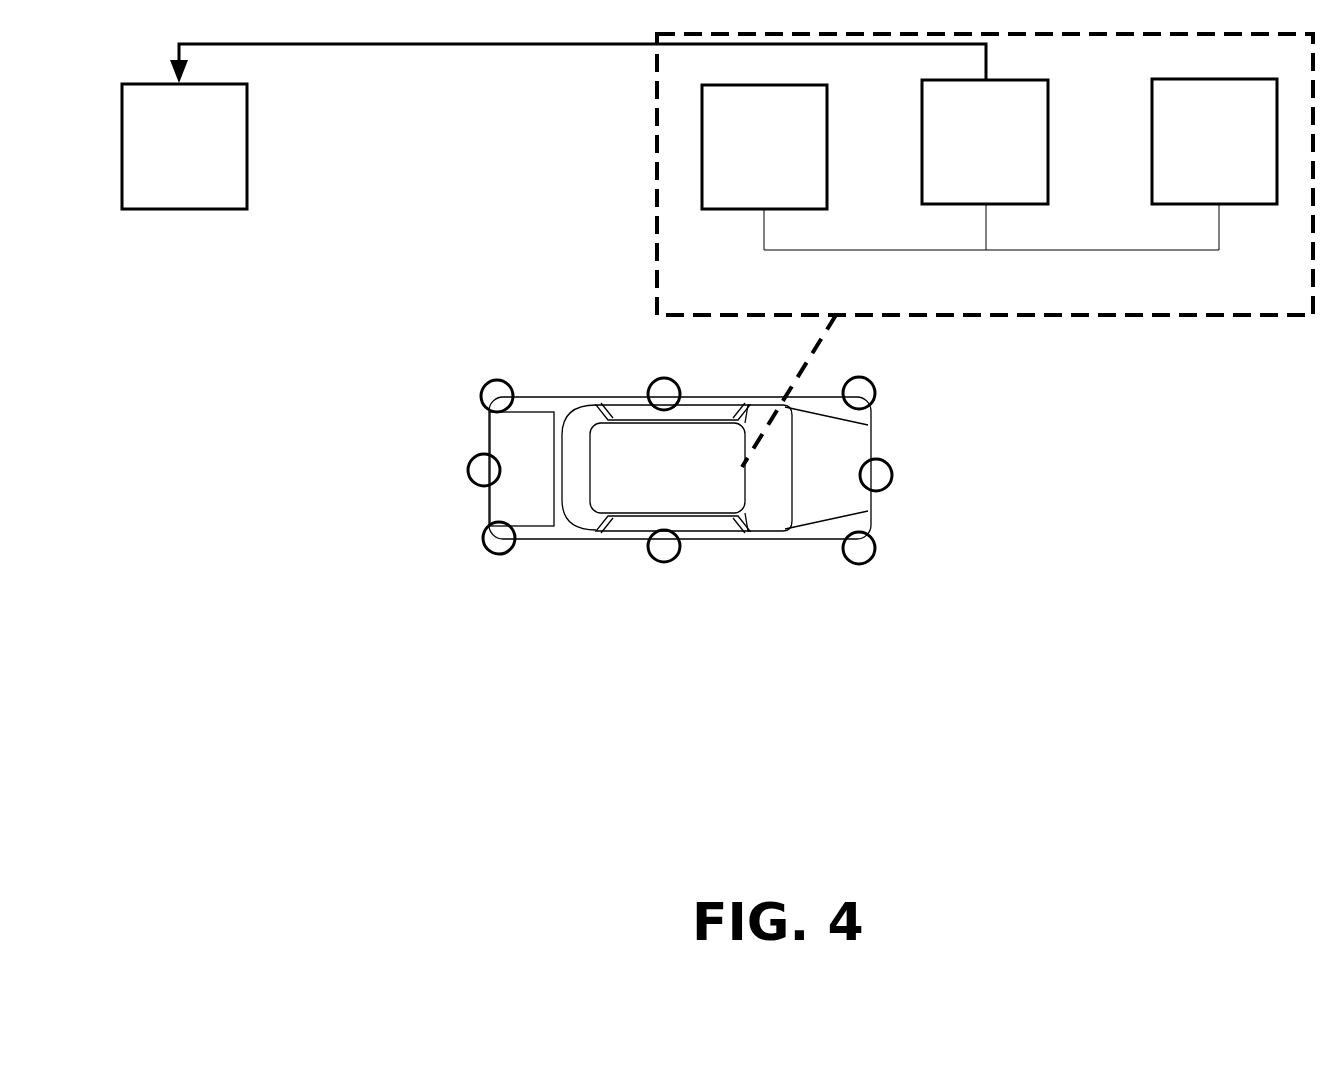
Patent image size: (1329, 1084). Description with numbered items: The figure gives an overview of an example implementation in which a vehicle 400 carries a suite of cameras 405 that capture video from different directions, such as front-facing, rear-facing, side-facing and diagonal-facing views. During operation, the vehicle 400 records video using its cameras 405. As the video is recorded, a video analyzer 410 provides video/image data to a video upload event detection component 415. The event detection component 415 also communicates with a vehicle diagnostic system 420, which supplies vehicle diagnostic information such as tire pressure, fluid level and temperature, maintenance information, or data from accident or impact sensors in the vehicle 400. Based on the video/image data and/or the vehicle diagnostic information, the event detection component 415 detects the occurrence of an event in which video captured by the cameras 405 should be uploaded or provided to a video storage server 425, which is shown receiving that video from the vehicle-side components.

The vehicle 400 is at (450, 334).
The cameras 405 is at (652, 382).
The video analyzer 410 is at (746, 189).
The event detection component 415 is at (967, 196).
The vehicle diagnostic system 420 is at (1196, 196).
The video storage server 425 is at (166, 204).